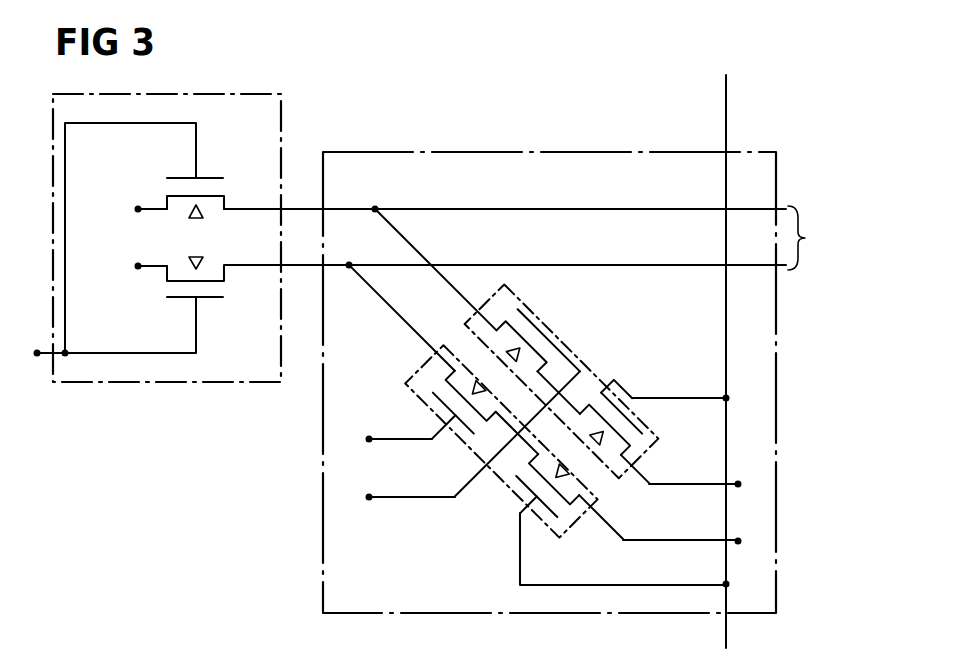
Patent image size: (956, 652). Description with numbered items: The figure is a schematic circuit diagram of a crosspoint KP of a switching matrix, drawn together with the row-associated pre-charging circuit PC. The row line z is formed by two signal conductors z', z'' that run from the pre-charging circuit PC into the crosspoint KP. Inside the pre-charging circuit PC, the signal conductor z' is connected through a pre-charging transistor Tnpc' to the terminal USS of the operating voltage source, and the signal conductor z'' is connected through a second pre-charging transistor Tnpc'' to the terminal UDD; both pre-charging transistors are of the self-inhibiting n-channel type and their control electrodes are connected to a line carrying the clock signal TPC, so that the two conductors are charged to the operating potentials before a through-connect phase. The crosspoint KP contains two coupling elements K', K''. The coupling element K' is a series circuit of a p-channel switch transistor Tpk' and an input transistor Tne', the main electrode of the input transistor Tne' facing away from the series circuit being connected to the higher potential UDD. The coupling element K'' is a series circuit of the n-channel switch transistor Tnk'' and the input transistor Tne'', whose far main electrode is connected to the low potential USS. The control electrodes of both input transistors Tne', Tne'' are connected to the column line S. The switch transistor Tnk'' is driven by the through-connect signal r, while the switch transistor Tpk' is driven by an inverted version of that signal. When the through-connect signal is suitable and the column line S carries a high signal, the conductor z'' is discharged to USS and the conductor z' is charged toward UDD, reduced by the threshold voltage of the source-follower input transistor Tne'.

The pre-charging circuit PC is at (190, 383).
The clock signal TPC is at (38, 362).
The pre-charging transistor Tnpc' is at (166, 238).
The pre-charging transistor Tnpc'' is at (169, 305).
The low potential terminal of the operating voltage source USS is at (429, 368).
The high potential terminal of the operating voltage source UDD is at (430, 369).
The signal conductor z' is at (505, 334).
The signal conductor z'' is at (505, 401).
The row line z is at (803, 238).
The crosspoint KP is at (323, 594).
The column line S is at (624, 361).
The coupling element K' is at (562, 381).
The coupling element K'' is at (501, 448).
The switch transistor Tpk' is at (535, 313).
The input transistor Tne' is at (644, 427).
The switch transistor Tnk'' is at (431, 389).
The input transistor Tne'' is at (571, 516).
The through-connect signal r is at (401, 433).